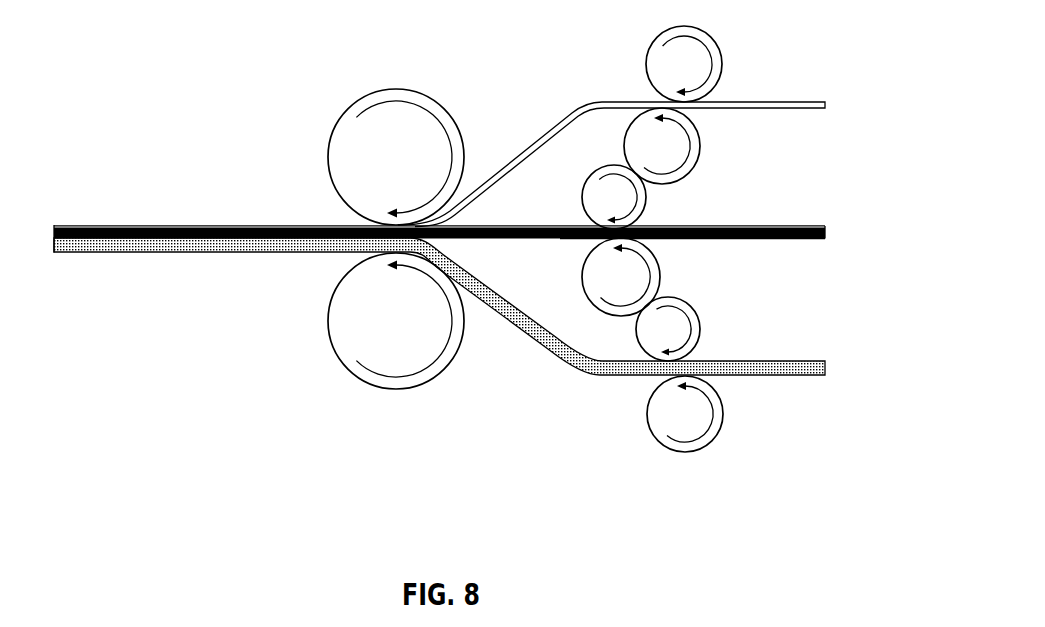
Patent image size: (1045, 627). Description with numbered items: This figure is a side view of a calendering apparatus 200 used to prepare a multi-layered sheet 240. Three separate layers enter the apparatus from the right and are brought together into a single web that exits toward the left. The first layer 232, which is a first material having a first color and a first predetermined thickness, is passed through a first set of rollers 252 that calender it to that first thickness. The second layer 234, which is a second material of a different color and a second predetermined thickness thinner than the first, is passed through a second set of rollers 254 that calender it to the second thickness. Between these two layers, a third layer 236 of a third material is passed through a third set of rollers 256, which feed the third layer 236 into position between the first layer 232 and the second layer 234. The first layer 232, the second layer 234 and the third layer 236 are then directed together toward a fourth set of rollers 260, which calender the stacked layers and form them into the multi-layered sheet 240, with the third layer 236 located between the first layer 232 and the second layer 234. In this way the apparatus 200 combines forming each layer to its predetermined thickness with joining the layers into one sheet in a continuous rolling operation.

The calendering apparatus 200 is at (252, 166).
The multi-layered sheet 240 is at (120, 226).
The third layer 236 is at (575, 226).
The second layer 234 is at (598, 102).
The first layer 232 is at (597, 376).
The fourth set of rollers 260 is at (390, 90).
The second set of rollers 254 is at (685, 27).
The third set of rollers 256 is at (613, 165).
The first set of rollers 252 is at (700, 328).